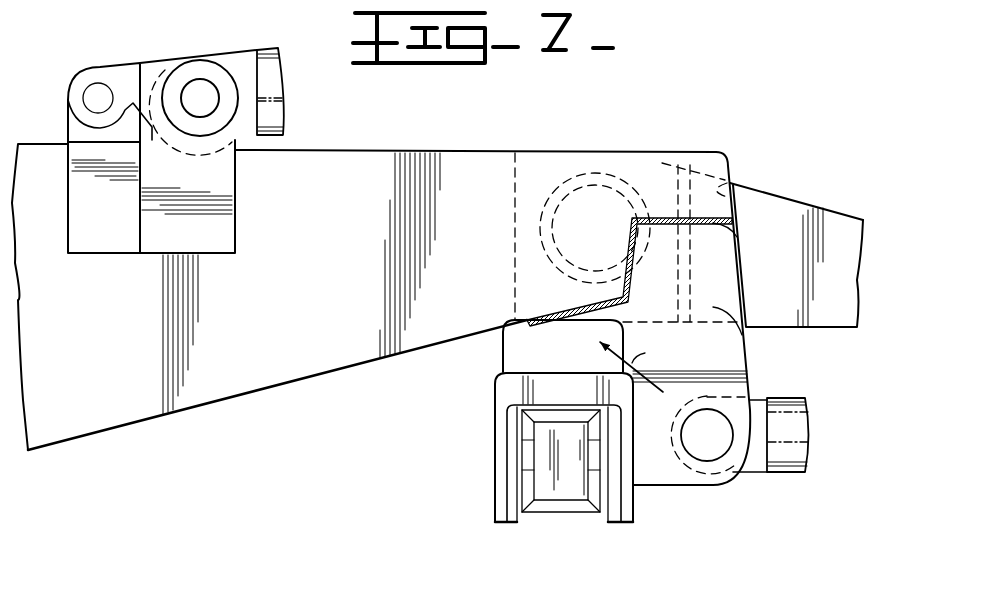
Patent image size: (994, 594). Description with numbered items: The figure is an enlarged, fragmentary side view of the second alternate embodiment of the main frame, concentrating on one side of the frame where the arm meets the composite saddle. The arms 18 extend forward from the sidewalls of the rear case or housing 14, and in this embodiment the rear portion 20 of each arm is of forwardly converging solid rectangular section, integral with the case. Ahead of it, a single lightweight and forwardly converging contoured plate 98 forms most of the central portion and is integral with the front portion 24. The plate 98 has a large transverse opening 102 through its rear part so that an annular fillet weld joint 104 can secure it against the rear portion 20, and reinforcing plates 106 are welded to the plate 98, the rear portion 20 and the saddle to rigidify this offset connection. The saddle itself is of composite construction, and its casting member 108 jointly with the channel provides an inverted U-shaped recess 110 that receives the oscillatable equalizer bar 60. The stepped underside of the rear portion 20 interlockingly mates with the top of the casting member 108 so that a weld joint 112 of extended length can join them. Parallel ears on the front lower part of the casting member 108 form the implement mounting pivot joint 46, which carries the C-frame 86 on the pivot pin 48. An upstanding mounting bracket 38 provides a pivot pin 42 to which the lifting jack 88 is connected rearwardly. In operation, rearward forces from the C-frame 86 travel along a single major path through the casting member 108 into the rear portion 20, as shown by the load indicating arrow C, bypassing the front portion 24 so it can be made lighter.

The rear case or housing 14 is at (740, 420).
The contoured arms 18 is at (340, 398).
The rear portion of arm 20 is at (147, 419).
The front portion of arm 24 is at (840, 210).
The upstanding mounting bracket 38 is at (160, 258).
The pivot pin 42 is at (200, 93).
The implement mounting pivot joint 46 is at (697, 403).
The pivot pin 48 is at (711, 447).
The equalizer bar 60 is at (568, 515).
The C-frame 86 is at (800, 432).
The lifting jack 88 is at (283, 105).
The contoured plate 98 is at (852, 287).
The transverse opening 102 is at (576, 179).
The annular fillet weld joint 104 is at (556, 228).
The reinforcing plate 106 is at (742, 197).
The casting member 108 is at (667, 472).
The inverted U-shaped channel or recess 110 is at (605, 517).
The weld joint 112 is at (563, 305).
The load indicating arrow C is at (631, 363).